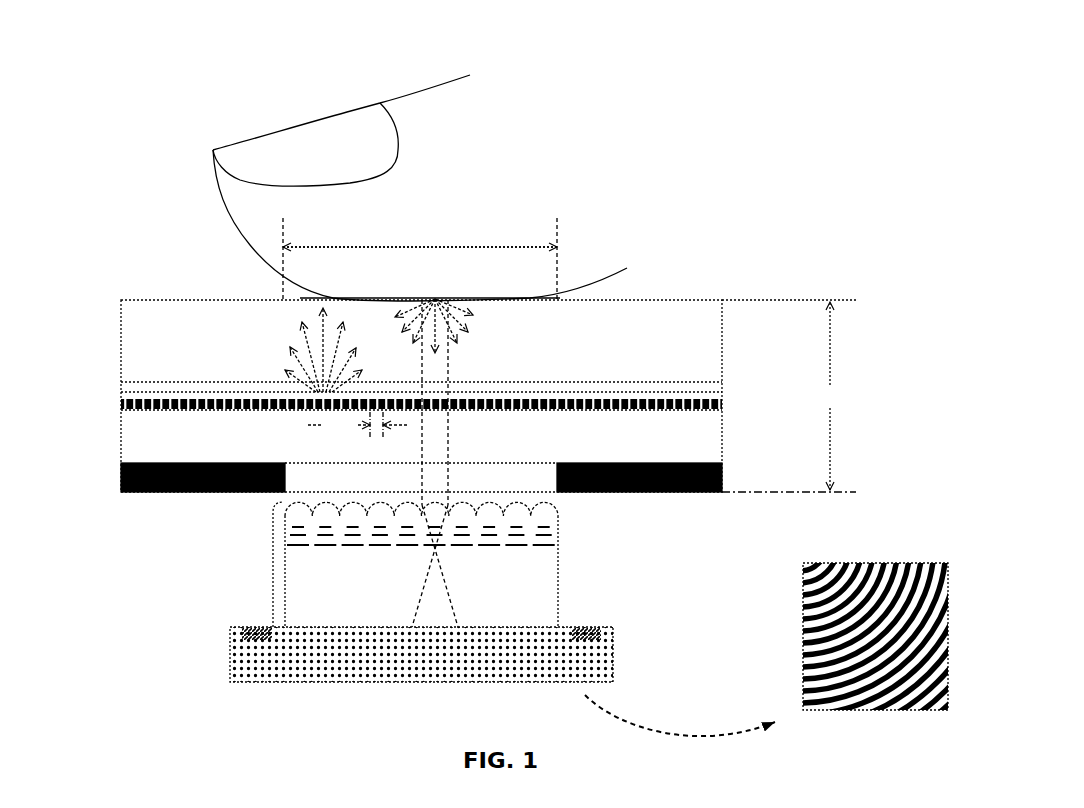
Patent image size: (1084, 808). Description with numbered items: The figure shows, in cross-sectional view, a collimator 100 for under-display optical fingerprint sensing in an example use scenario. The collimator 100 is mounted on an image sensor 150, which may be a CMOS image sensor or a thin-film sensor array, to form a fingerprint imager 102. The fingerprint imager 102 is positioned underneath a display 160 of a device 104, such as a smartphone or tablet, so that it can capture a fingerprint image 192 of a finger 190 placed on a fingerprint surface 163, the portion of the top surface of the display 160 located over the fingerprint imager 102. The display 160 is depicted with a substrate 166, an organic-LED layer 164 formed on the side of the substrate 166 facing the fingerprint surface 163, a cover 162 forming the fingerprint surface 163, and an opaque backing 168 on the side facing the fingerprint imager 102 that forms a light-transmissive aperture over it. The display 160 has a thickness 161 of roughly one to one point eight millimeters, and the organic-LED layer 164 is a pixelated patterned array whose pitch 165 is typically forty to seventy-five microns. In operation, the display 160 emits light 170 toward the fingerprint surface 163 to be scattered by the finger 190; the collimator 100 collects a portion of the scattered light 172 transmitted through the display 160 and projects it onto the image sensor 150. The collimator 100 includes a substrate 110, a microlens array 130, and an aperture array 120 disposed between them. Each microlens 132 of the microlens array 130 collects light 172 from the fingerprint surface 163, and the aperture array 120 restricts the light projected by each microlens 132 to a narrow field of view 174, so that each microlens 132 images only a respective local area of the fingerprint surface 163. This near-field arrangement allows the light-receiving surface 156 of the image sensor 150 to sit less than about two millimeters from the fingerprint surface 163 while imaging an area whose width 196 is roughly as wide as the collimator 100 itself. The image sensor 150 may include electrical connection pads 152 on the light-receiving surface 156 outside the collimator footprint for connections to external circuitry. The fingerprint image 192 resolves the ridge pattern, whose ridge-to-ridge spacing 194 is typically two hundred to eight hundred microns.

The collimator 100 is at (273, 566).
The fingerprint imager 102 is at (677, 503).
The device 104 is at (118, 245).
The substrate 110 is at (558, 585).
The aperture array 120 is at (567, 531).
The microlens array 130 is at (565, 508).
The microlens 132 is at (300, 504).
The image sensor 150 is at (230, 650).
The electrical connection pads 152 is at (256, 631).
The light-receiving surface 156 is at (320, 627).
The display 160 is at (106, 300).
The thickness 161 is at (789, 396).
The cover 162 is at (724, 325).
The fingerprint surface 163 is at (328, 297).
The organic-LED layer 164 is at (724, 401).
The pitch 165 is at (357, 425).
The substrate 166 is at (724, 433).
The opaque backing 168 is at (724, 470).
The light 170 is at (278, 345).
The light 172 is at (482, 324).
The field of view 174 is at (456, 371).
The finger 190 is at (277, 107).
The fingerprint image 192 is at (890, 563).
The ridge-to-ridge spacing 194 is at (798, 673).
The width 196 is at (420, 259).